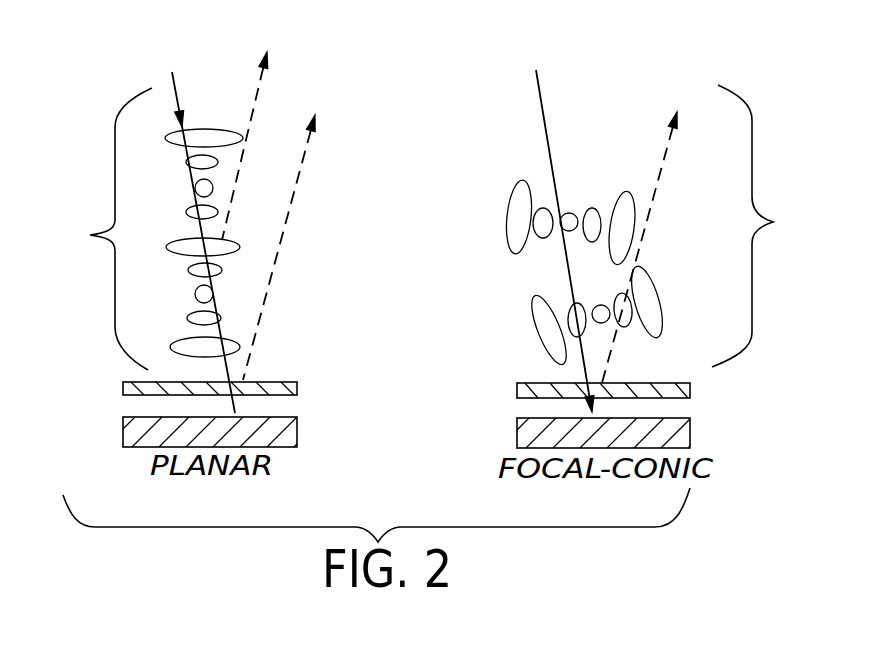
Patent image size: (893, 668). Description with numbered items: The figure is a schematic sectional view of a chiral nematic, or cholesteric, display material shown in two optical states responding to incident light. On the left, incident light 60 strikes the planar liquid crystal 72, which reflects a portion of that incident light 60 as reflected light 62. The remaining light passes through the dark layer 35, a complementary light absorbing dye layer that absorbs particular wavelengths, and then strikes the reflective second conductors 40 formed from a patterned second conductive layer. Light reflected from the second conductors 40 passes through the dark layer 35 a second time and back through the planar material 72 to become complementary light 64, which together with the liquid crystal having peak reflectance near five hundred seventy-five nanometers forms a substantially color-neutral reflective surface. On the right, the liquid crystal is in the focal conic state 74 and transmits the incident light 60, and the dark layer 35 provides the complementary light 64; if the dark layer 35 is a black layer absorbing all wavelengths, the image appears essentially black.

The dark layer 35 is at (123, 384).
The second conductors 40 is at (123, 431).
The incident light 60 is at (176, 81).
The reflected light 62 is at (256, 100).
The complementary light 64 is at (301, 173).
The planar liquid crystal 72 is at (149, 229).
The focal conic state 74 is at (660, 226).